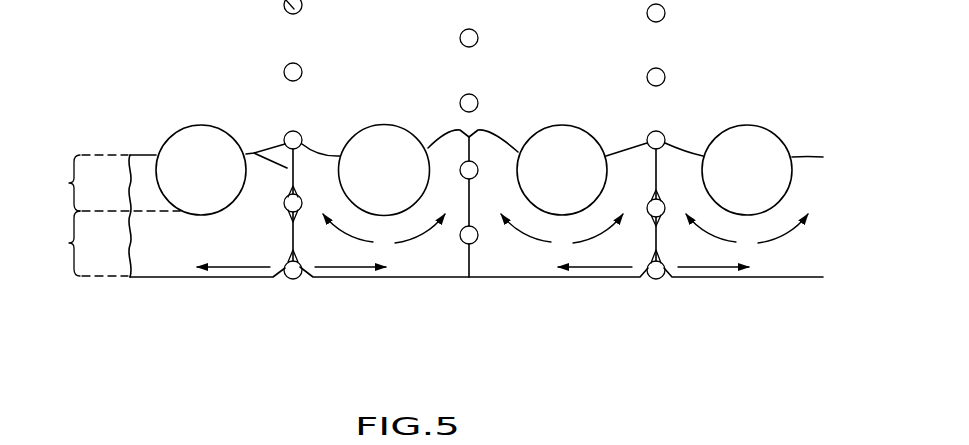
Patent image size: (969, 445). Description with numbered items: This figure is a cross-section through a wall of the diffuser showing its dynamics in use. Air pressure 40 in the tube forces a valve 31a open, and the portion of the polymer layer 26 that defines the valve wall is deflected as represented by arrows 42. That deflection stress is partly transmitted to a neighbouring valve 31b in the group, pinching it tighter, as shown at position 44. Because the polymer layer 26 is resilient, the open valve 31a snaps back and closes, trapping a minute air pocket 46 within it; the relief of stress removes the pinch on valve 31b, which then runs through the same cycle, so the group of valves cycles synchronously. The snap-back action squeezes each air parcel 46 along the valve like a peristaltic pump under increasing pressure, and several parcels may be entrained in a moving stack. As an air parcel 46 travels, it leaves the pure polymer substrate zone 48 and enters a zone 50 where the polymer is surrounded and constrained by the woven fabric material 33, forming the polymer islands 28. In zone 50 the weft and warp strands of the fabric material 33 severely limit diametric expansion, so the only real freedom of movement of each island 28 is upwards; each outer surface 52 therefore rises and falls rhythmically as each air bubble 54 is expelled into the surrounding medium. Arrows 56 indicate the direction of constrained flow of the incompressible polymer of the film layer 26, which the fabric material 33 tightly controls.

The polymer layer 26 is at (147, 167).
The polymer island 28 is at (433, 157).
The valve 31a is at (253, 152).
The neighbouring valve 31b is at (463, 197).
The fabric material 33 is at (182, 125).
The air pressure 40 is at (155, 287).
The arrows 42 is at (230, 284).
The position 44 is at (477, 270).
The air pocket 46 is at (291, 222).
The pure polymer substrate zone 48 is at (80, 243).
The zone 50 is at (106, 183).
The outer surface 52 is at (276, 145).
The air bubble 54 is at (297, 137).
The arrows 56 is at (343, 234).